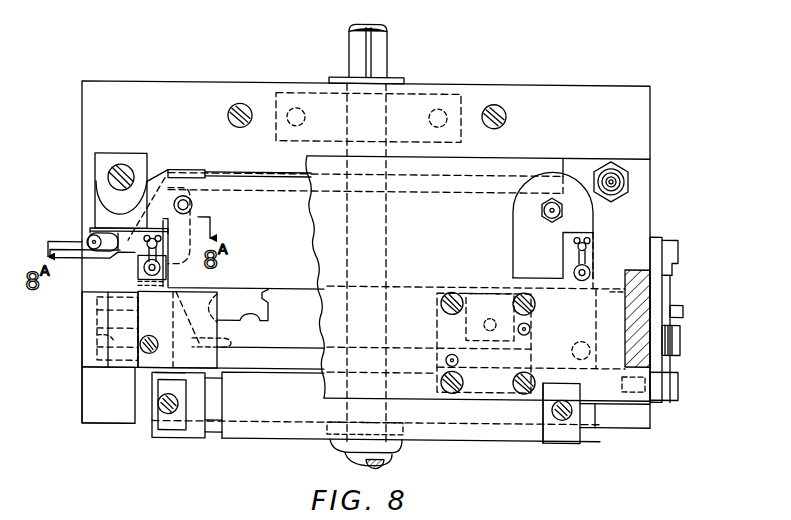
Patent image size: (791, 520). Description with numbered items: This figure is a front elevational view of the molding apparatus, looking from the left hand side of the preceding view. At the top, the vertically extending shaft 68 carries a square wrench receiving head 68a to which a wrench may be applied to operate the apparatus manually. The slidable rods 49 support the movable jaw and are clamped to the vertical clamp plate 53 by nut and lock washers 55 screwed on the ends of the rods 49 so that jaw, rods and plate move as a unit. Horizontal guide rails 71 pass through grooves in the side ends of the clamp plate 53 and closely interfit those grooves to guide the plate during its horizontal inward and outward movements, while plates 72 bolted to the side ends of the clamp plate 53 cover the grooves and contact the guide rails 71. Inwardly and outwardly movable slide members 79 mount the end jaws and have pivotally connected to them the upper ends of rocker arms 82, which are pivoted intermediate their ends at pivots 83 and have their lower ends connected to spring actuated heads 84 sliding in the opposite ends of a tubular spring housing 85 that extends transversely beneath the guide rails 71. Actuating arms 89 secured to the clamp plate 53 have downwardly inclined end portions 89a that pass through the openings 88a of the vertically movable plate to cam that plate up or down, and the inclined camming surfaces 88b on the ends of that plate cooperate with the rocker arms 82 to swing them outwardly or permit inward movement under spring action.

The slidable rods 49 is at (110, 172).
The clamp plate 53 is at (631, 211).
The nut and lock washers 55 is at (625, 159).
The shaft 68 is at (384, 241).
The square wrench receiving head 68a is at (382, 49).
The horizontal guide rails 71 is at (107, 353).
The plates 72 is at (656, 230).
The slide members 79 is at (129, 231).
The rocker arms 82 is at (145, 404).
The pivots 83 is at (167, 327).
The spring actuated heads 84 is at (200, 430).
The tubular spring housing 85 is at (290, 436).
The openings 88a is at (252, 323).
The inclined camming surfaces 88b is at (228, 343).
The actuating arms 89 is at (488, 277).
The downwardly inclined end portions 89a is at (499, 325).